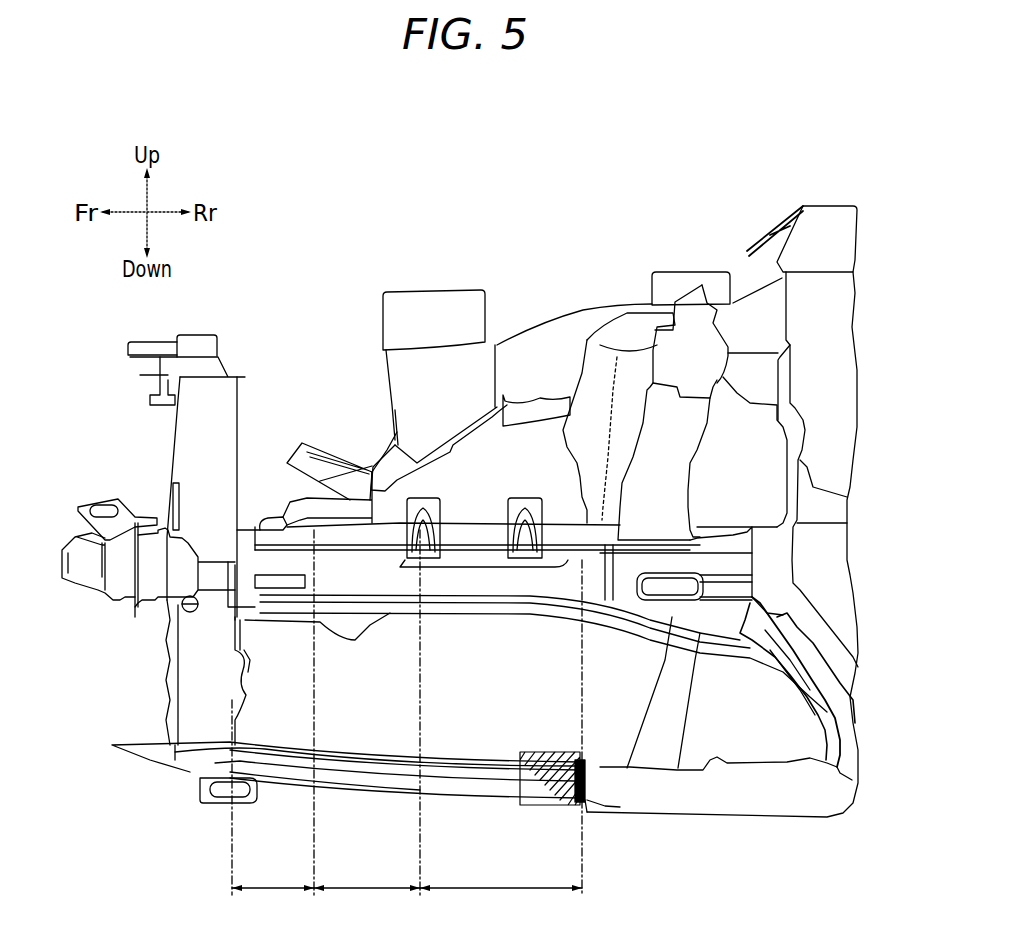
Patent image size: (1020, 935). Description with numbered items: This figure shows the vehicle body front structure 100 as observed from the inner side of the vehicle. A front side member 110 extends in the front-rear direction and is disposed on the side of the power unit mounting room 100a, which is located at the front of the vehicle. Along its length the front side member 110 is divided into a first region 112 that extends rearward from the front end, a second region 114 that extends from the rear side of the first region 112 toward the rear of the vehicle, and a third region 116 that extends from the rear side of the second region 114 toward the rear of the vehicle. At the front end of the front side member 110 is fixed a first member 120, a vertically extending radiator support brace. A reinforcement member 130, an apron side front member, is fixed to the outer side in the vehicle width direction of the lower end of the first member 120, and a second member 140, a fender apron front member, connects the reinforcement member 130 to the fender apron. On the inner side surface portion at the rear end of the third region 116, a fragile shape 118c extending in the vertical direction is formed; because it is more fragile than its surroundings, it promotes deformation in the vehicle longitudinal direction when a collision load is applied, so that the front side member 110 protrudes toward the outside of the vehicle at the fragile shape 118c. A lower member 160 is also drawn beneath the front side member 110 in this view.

The vehicle body front structure 100 is at (505, 207).
The power unit mounting room 100a is at (483, 660).
The front side member 110 is at (396, 618).
The first region 112 is at (273, 797).
The second region 114 is at (367, 712).
The third region 116 is at (501, 712).
The fragile shape 118c is at (622, 630).
The first member 120 is at (190, 694).
The reinforcement member 130 is at (240, 693).
The second member 140 is at (287, 498).
The lower member / sub-frame tube 160 is at (456, 757).